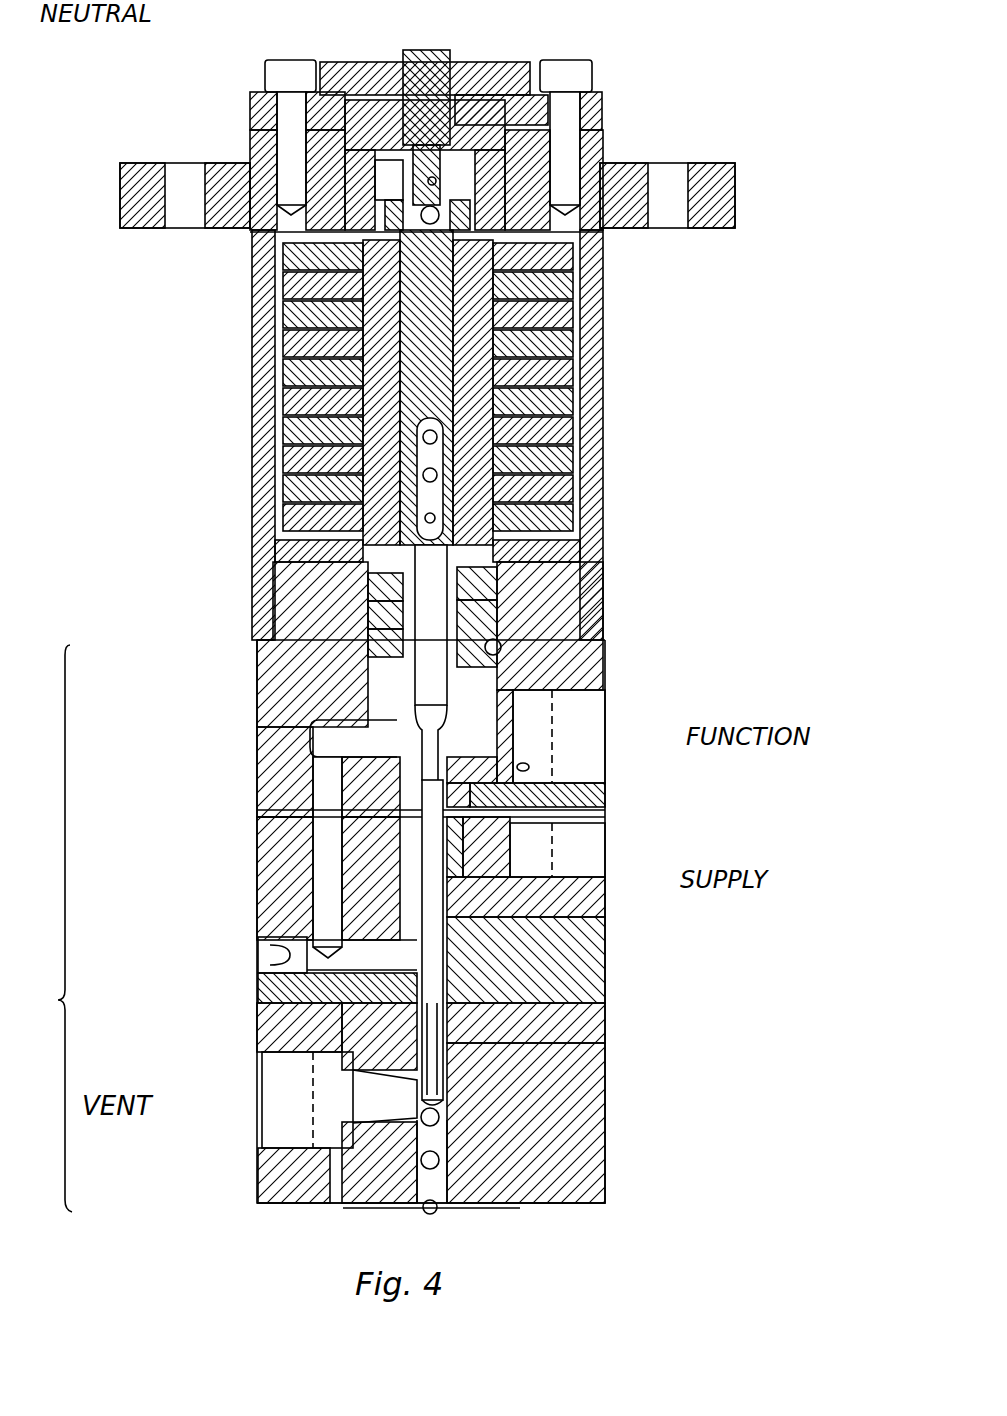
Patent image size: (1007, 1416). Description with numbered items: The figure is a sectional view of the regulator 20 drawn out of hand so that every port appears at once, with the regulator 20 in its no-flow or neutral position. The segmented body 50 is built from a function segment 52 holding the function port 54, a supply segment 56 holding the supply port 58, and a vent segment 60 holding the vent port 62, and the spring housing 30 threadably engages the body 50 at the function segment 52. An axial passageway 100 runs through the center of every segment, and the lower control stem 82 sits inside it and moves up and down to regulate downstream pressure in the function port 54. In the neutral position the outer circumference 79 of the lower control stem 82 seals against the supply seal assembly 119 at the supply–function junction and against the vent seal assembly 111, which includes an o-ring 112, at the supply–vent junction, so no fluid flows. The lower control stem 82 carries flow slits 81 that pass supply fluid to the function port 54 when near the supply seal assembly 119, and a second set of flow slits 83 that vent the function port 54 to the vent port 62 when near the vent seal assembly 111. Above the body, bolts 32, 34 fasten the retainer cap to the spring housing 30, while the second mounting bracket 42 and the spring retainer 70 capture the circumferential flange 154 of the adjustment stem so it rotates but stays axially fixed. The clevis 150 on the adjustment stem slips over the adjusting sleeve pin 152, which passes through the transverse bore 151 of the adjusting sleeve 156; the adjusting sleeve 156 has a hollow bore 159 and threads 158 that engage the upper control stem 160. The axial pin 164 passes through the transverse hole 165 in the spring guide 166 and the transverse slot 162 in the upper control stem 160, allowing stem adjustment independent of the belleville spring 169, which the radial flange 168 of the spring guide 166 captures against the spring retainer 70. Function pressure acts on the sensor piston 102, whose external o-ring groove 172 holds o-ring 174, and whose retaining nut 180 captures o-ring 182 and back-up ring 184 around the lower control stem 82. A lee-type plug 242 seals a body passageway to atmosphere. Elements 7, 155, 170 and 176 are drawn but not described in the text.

The passage 7 is at (540, 865).
The regulator 20 is at (766, 85).
The spring housing 30 is at (255, 268).
The bolt 32 is at (268, 62).
The bolt 34 is at (585, 62).
The second mounting bracket 42 is at (157, 163).
The segmented body 50 is at (48, 928).
The function segment 52 is at (255, 657).
The function port 54 is at (600, 692).
The supply segment 56 is at (255, 828).
The supply port 58 is at (580, 822).
The vent segment 60 is at (257, 1190).
The vent port 62 is at (280, 1148).
The spring retainer 70 is at (495, 128).
The outer circumference 79 is at (340, 860).
The flow slits 81 is at (560, 735).
The lower control stem 82 is at (447, 970).
The second set of flow slits 83 is at (500, 1050).
The axial passageway 100 is at (445, 1118).
The sensor piston 102 is at (501, 645).
The vent seal assembly 111 is at (520, 1003).
The o-ring 112 is at (440, 1210).
The supply seal assembly 119 is at (600, 790).
The clevis 150 is at (436, 181).
The transverse bore 151 is at (500, 205).
The adjusting sleeve pin 152 is at (500, 262).
The circumferential flange 154 is at (262, 115).
The top plate 155 is at (275, 240).
The adjusting sleeve 156 is at (500, 185).
The threads 158 is at (290, 305).
The hollow bore 159 is at (495, 300).
The upper control stem 160 is at (565, 372).
The transverse slot 162 is at (493, 410).
The axial pin 164 is at (423, 475).
The transverse hole 165 is at (435, 518).
The spring guide 166 is at (300, 410).
The radial flange 168 is at (300, 553).
The belleville spring 169 is at (330, 340).
The body block 170 is at (300, 580).
The external o-ring groove 172 is at (380, 655).
The o-ring 174 is at (385, 668).
The bushing lower ring 176 is at (385, 682).
The retaining nut 180 is at (560, 655).
The o-ring 182 is at (497, 595).
The back-up ring 184 is at (497, 578).
The lee-type plug 242 is at (258, 955).